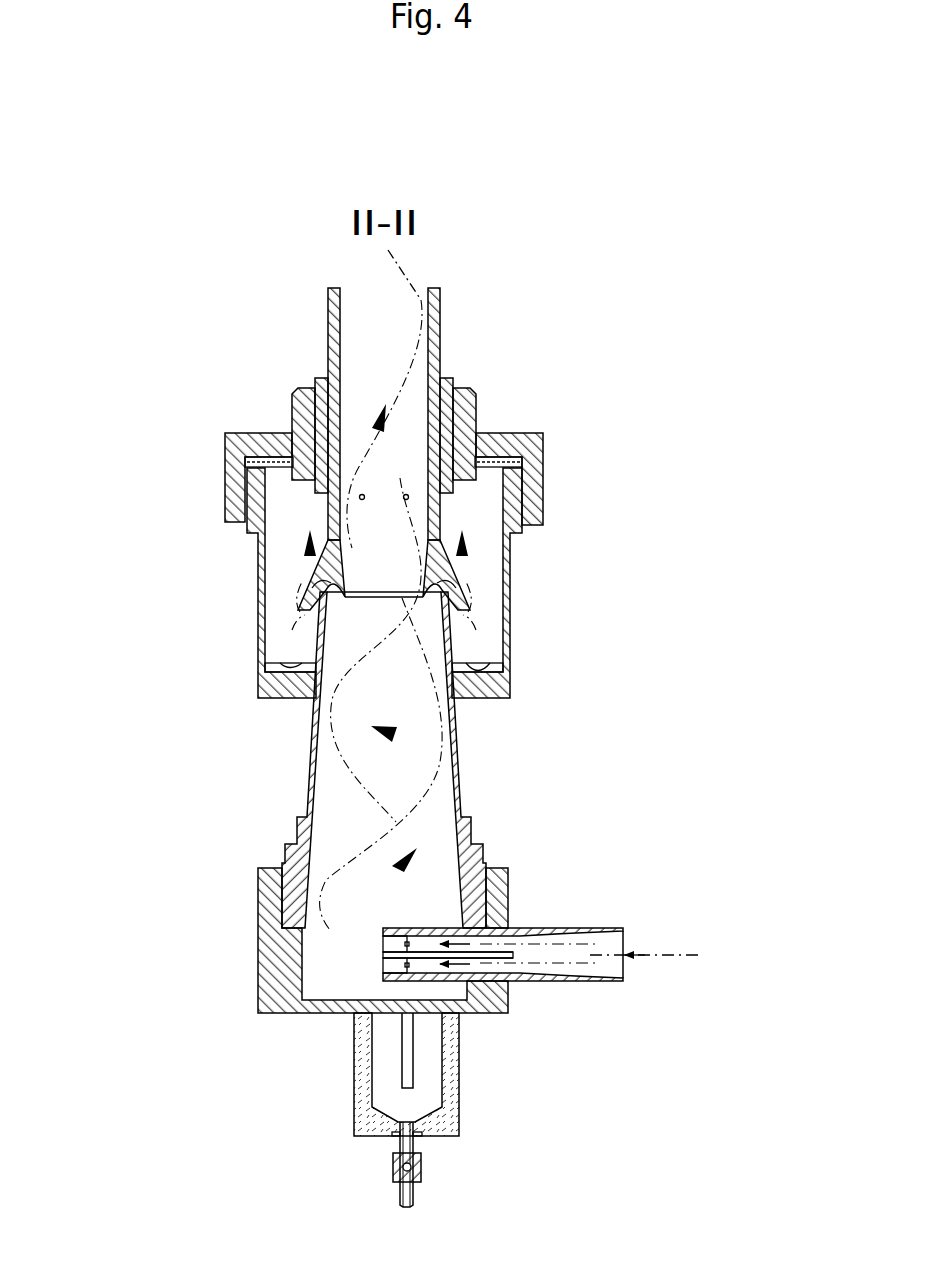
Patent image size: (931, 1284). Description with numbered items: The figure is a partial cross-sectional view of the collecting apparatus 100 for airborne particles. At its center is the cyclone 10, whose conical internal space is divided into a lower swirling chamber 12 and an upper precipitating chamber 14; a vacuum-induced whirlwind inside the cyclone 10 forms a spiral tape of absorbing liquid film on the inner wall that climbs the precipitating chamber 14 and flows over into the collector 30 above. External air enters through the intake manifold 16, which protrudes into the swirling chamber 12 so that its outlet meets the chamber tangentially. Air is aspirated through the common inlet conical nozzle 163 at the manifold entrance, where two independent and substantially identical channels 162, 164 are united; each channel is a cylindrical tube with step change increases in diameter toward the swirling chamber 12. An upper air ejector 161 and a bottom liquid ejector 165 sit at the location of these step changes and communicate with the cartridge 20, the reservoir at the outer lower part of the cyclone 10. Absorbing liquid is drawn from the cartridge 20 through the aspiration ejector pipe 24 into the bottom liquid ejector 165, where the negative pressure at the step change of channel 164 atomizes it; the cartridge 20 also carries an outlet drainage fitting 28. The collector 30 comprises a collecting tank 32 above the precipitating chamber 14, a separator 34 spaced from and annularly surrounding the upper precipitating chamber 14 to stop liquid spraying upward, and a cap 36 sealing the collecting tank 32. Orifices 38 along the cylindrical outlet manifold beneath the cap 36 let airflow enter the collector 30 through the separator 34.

The collecting apparatus 100 is at (79, 318).
The cyclone 10 is at (157, 907).
The swirling chamber 12 is at (265, 943).
The precipitating chamber 14 is at (262, 876).
The intake manifold 16 is at (800, 770).
The upper air ejector 161 is at (510, 927).
The channel 162 is at (515, 950).
The common inlet conical nozzle 163 is at (628, 948).
The channel 164 is at (515, 979).
The bottom liquid ejector 165 is at (510, 1015).
The cartridge 20 is at (455, 1114).
The aspiration ejector pipe 24 is at (413, 1061).
The outlet drainage fitting 28 is at (425, 1174).
The collector 30 is at (633, 437).
The collecting tank 32 is at (510, 561).
The separator 34 is at (455, 487).
The cap 36 is at (540, 484).
The orifices 38 is at (412, 496).